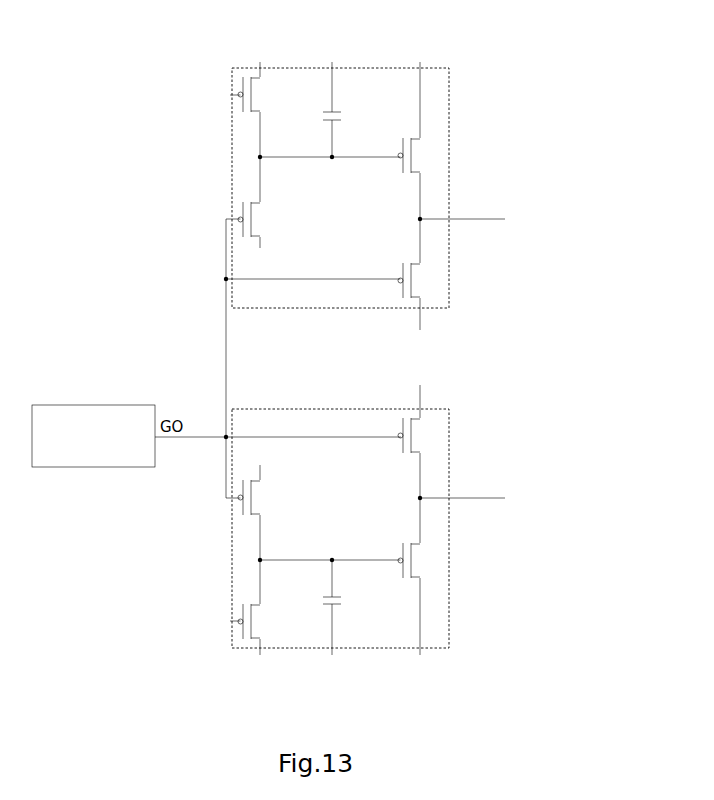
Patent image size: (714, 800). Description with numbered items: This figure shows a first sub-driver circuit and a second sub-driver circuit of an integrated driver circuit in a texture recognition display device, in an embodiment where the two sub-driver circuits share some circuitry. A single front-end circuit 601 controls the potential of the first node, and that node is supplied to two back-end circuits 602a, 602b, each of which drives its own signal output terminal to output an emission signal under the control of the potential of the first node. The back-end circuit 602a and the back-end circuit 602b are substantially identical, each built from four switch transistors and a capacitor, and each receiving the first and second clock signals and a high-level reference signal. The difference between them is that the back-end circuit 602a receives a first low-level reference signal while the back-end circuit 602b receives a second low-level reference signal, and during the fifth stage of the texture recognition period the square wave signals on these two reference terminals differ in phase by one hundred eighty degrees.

The front-end circuit 601 is at (92, 467).
The back-end circuit 602a is at (367, 68).
The back-end circuit 602b is at (367, 648).